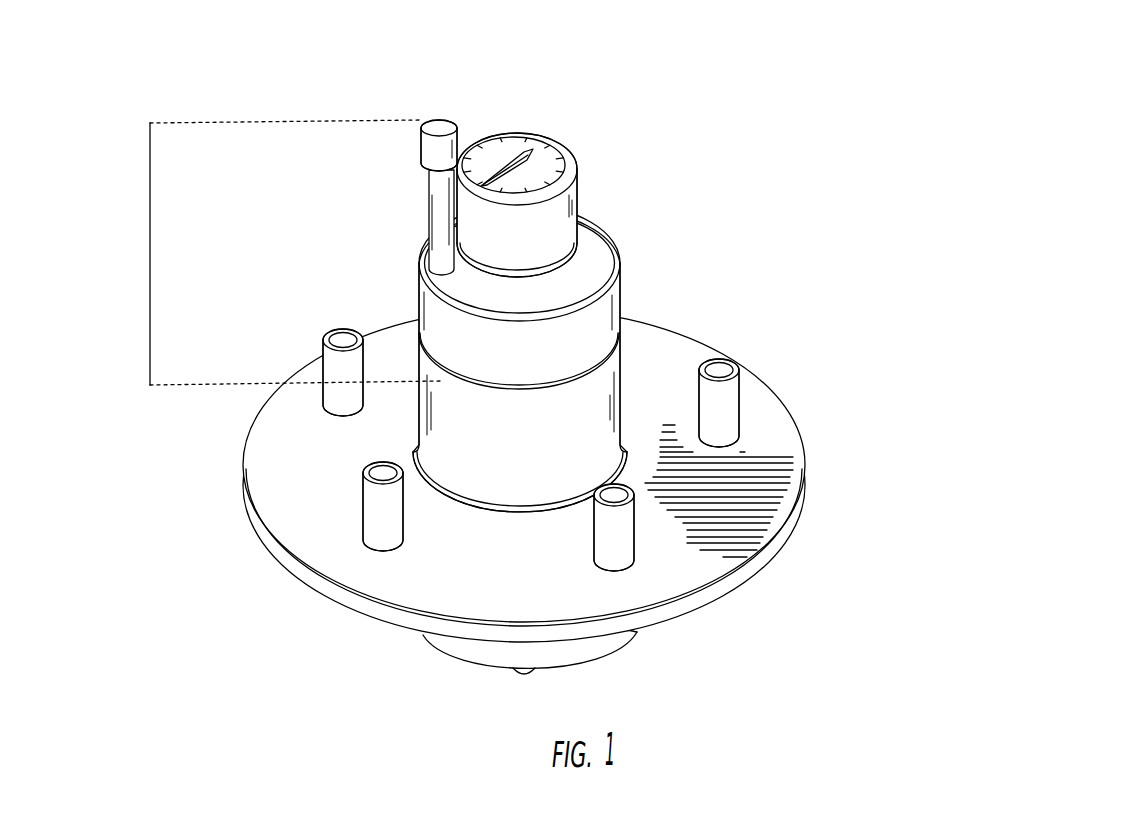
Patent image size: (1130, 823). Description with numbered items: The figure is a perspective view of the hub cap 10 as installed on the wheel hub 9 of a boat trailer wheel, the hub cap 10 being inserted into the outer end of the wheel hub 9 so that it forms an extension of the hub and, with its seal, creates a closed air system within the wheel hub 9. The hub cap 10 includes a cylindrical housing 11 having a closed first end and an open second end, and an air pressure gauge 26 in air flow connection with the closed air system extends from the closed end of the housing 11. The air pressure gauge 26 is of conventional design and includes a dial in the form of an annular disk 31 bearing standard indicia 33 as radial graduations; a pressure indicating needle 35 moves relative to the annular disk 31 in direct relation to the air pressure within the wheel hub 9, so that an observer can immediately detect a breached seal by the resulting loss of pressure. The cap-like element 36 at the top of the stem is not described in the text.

The wheel hub 9 is at (717, 503).
The hub cap 10 is at (150, 268).
The cylindrical housing 11 is at (528, 346).
The air pressure gauge 26 is at (517, 244).
The annular disk 31 is at (532, 176).
The indicia 33 is at (437, 204).
The pressure indicating needle 35 is at (530, 153).
The cap 36 is at (440, 125).